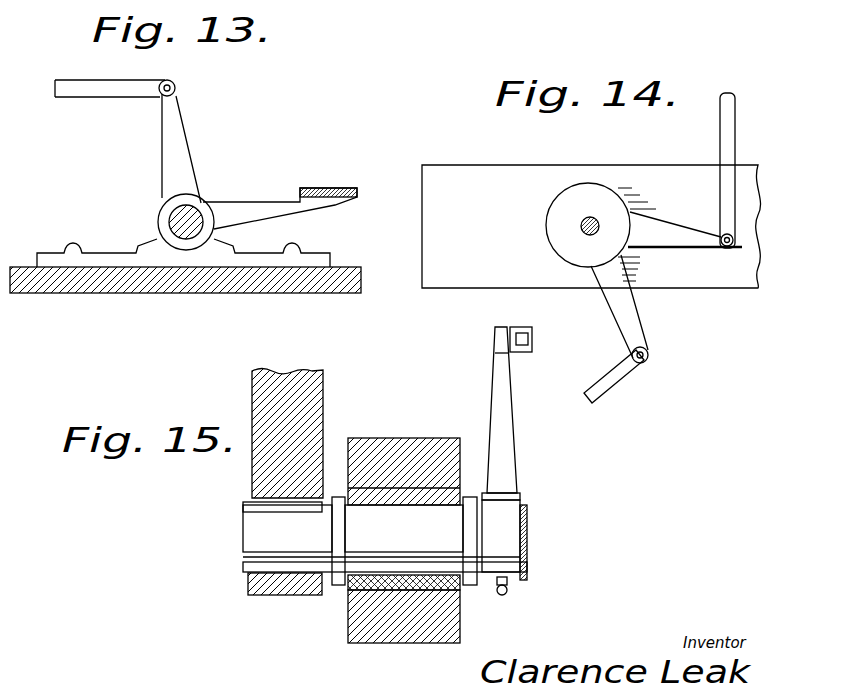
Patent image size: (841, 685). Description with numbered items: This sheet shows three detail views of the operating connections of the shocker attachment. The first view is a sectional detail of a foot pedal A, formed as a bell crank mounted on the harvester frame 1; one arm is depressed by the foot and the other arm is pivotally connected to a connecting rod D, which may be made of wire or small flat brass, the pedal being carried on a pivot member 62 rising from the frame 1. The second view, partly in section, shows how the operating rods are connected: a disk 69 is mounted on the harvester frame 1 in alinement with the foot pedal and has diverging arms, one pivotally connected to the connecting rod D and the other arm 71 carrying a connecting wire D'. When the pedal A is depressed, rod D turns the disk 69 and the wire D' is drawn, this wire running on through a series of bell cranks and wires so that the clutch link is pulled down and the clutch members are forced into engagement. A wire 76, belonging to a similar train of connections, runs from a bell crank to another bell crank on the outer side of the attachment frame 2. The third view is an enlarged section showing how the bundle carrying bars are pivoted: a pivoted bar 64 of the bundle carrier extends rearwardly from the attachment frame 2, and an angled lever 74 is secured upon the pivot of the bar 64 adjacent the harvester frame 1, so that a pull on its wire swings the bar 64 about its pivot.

In FIG. 13, the frame of the binder or harvester 1 is at (101, 323).
In FIG. 14, the frame of the binder or harvester 1 is at (470, 200).
In FIG. 13, the lever arm 62 is at (162, 173).
In FIG. 13, the foot pedal A is at (270, 196).
In FIG. 13, the connecting rod D is at (115, 109).
In FIG. 14, the connecting rod D is at (688, 170).
In FIG. 14, the disk 69 is at (601, 232).
In FIG. 14, the wire 76 is at (675, 222).
In FIG. 14, the arm of the disk 71 is at (617, 308).
In FIG. 14, the connecting wire D' is at (631, 376).
In FIG. 15, the pivoted bar 64 is at (307, 398).
In FIG. 15, the frame of the attachment 2 is at (397, 438).
In FIG. 15, the angled lever 74 is at (502, 435).